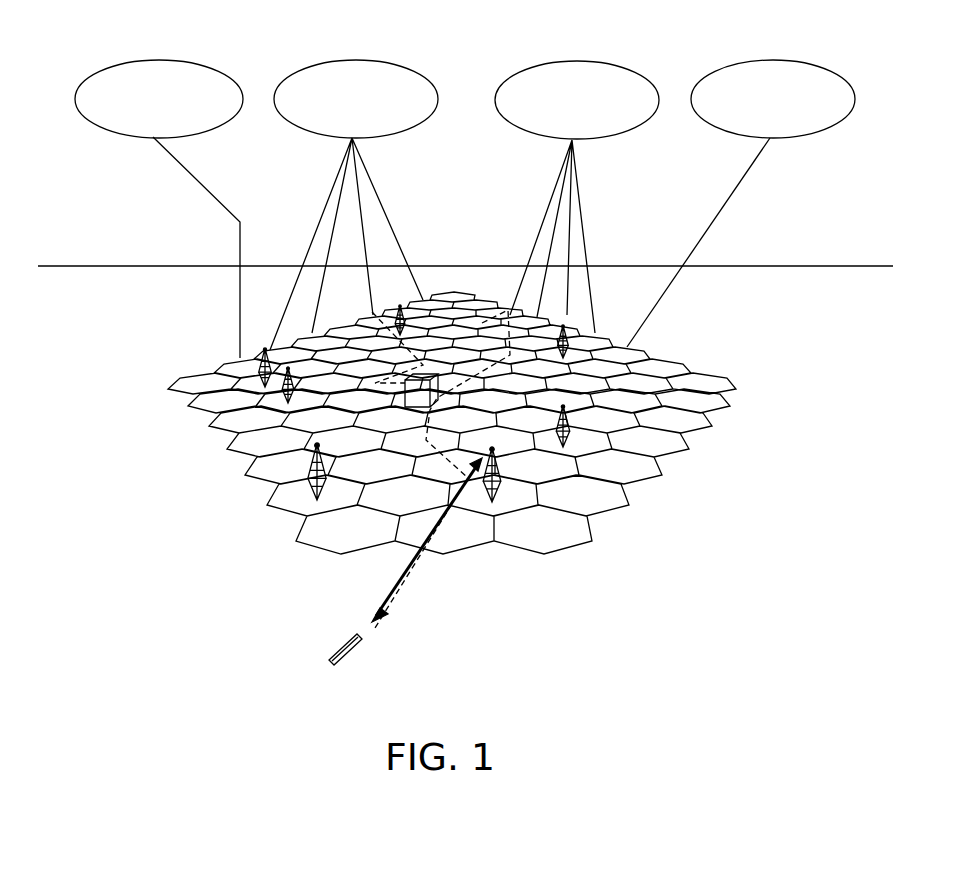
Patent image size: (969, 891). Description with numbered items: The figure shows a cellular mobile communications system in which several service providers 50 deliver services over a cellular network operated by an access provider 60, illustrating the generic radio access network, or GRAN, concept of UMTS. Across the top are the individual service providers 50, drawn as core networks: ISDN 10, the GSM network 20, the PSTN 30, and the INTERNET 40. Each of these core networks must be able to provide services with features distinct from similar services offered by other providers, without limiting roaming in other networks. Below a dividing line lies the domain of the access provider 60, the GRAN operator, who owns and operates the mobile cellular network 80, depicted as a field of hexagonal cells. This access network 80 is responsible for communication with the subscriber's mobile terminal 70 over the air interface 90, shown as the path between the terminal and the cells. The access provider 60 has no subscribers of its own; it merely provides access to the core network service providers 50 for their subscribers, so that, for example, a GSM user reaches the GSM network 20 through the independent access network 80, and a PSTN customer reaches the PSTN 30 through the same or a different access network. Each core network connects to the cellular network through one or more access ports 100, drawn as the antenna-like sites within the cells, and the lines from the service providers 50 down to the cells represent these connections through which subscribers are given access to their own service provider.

The ISDN 10 is at (175, 60).
The GSM network 20 is at (386, 60).
The PSTN 30 is at (594, 60).
The INTERNET 40 is at (796, 60).
The service providers 50 is at (128, 222).
The access provider 60 is at (120, 300).
The terminals 70 is at (335, 648).
The access network 80 is at (248, 468).
The air interface 90 is at (408, 593).
The access ports 100 is at (597, 333).